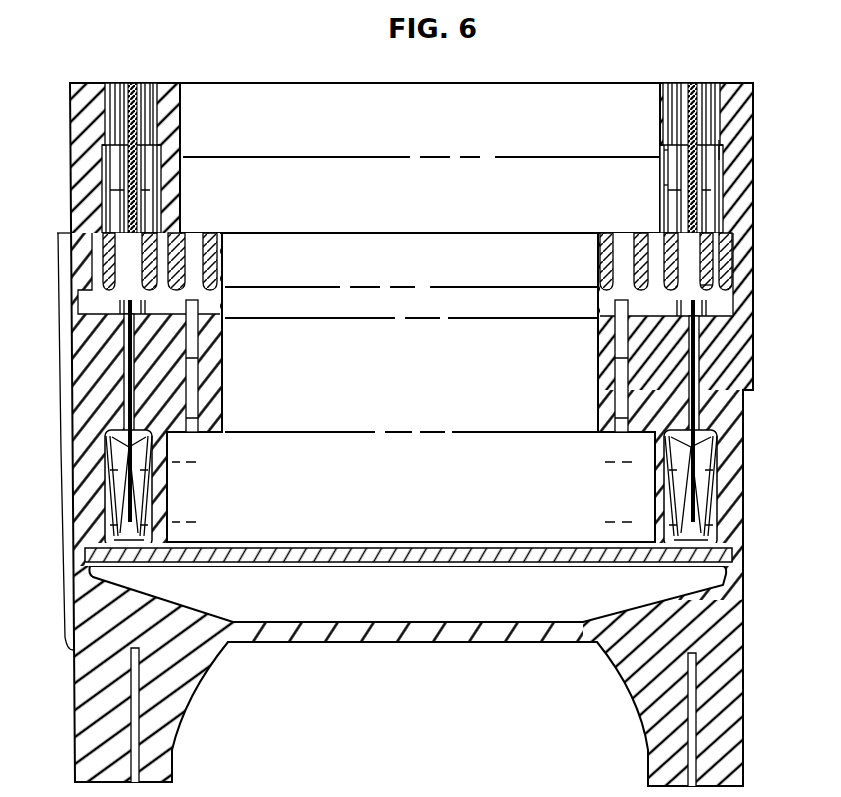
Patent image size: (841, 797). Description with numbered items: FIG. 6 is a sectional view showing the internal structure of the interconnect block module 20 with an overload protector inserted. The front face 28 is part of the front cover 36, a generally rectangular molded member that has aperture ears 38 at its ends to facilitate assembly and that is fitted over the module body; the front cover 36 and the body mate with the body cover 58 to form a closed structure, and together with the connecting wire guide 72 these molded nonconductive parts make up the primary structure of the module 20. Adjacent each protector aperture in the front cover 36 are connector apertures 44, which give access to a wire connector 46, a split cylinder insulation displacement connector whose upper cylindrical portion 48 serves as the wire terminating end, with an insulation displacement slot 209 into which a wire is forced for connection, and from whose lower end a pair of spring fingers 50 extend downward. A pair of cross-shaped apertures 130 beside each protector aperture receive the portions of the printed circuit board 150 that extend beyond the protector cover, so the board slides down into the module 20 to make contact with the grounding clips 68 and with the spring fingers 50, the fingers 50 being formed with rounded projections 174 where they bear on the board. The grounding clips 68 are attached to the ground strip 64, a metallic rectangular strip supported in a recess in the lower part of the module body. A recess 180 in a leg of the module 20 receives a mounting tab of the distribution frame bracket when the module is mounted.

The interconnect block module 20 is at (284, 80).
The front face 28 is at (520, 82).
The front cover 36 is at (402, 141).
The aperture ears 38 is at (66, 249).
The connector aperture 44 is at (150, 83).
The wire connector 46 is at (664, 148).
The upper cylindrical portion 48 is at (664, 185).
The spring fingers 50 is at (714, 289).
The body cover 58 is at (388, 641).
The ground strip 64 is at (382, 548).
The grounding clips 68 is at (137, 457).
The connecting wire guide 72 is at (72, 634).
The cross-shaped apertures 130 is at (140, 118).
The printed circuit board 150 is at (128, 515).
The rounded projections 174 is at (170, 286).
The recess 180 is at (135, 722).
The insulation displacement slot 209 is at (720, 148).